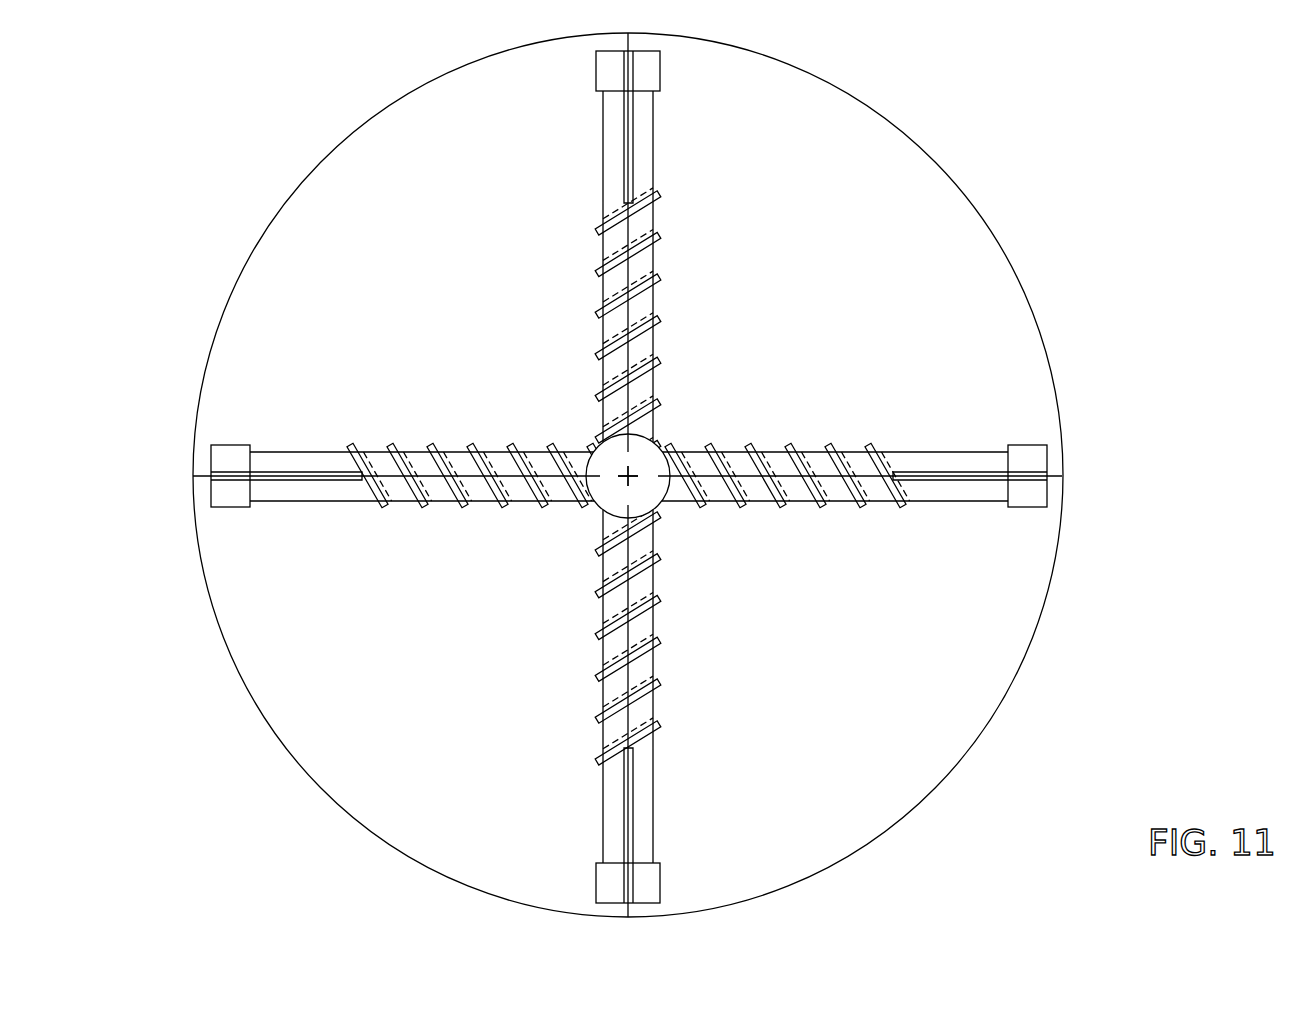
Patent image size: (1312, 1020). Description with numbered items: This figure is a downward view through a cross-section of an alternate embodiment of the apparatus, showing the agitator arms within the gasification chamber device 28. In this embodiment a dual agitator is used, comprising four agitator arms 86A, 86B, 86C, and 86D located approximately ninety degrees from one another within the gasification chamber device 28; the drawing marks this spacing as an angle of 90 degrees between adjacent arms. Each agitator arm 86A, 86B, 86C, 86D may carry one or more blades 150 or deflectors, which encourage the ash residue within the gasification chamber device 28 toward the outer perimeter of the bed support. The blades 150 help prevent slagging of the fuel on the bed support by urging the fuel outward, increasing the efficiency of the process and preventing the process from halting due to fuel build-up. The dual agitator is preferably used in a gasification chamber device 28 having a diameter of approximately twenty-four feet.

The gasification chamber device 28 is at (962, 192).
The agitator arm 86A is at (660, 258).
The agitator arm 86B is at (854, 445).
The agitator arm 86C is at (660, 820).
The agitator arm 86D is at (275, 445).
The blade 150 is at (788, 443).
The angle between lead screws 90 is at (753, 478).